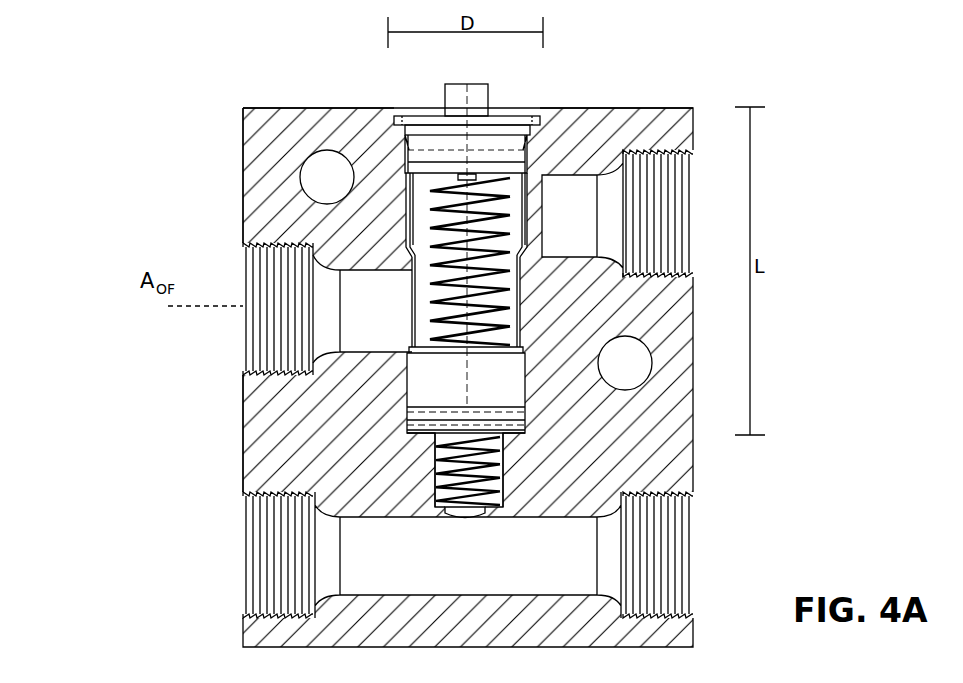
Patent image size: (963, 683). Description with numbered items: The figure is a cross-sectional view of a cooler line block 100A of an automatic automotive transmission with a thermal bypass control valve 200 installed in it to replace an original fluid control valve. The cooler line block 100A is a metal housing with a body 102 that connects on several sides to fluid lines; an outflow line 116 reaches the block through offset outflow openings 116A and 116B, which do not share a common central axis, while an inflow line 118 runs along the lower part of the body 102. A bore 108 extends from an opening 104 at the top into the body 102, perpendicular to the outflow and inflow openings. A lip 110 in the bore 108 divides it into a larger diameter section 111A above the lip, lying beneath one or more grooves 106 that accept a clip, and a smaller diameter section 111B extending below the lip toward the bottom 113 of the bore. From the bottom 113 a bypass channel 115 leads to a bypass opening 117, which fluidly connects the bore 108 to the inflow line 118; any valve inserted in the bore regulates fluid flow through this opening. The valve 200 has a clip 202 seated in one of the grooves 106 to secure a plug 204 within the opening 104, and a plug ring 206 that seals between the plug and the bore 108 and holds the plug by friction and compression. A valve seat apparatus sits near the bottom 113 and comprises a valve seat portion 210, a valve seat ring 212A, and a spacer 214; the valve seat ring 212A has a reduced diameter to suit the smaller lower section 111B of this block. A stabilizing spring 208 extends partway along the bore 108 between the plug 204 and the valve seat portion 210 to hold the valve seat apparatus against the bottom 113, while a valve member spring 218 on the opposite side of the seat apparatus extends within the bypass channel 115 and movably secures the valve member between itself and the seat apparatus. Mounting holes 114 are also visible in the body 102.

The cooler line block 100A is at (127, 158).
The body 102 is at (243, 177).
The opening 104 is at (422, 107).
The grooves 106 is at (548, 115).
The bore 108 is at (404, 152).
The lip 110 is at (245, 236).
The larger diameter section 111A is at (512, 212).
The smaller diameter section 111B is at (407, 390).
The bottom 113 is at (410, 450).
The mounting holes 114 is at (308, 158).
The bypass channel 115 is at (503, 485).
The outflow line 116 is at (359, 288).
The outflow opening 116A is at (333, 327).
The outflow opening 116B is at (587, 192).
The bypass opening 117 is at (463, 519).
The inflow line 118 is at (376, 551).
The thermal bypass control valve 200 is at (496, 87).
The clip 202 is at (398, 116).
The plug 204 is at (483, 84).
The plug ring 206 is at (537, 140).
The stabilizing spring 208 is at (528, 318).
The valve seat portion 210 is at (526, 388).
The valve seat ring 212A is at (526, 413).
The spacer 214 is at (526, 430).
The valve member spring 218 is at (428, 474).